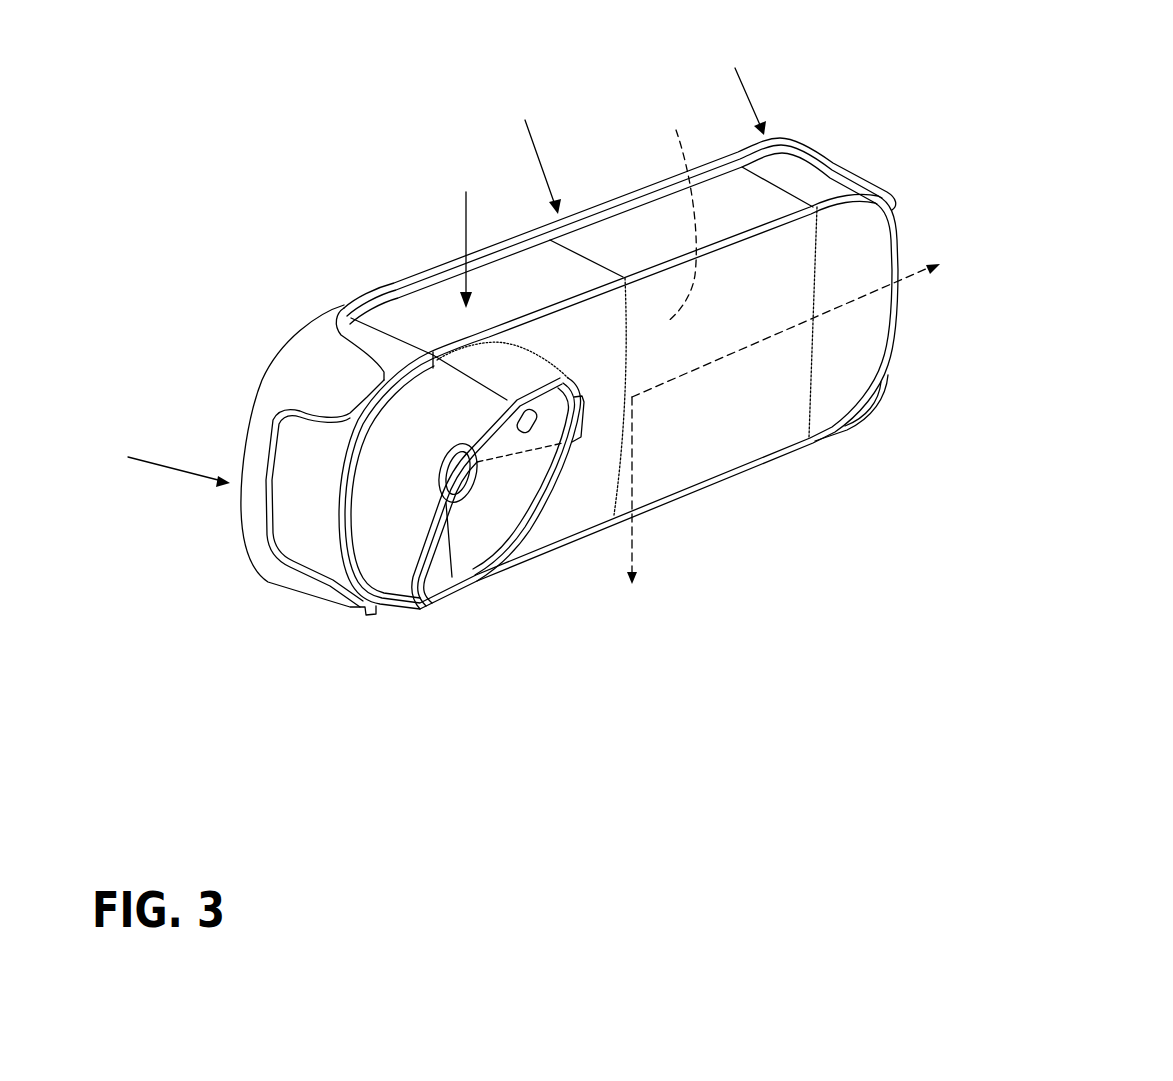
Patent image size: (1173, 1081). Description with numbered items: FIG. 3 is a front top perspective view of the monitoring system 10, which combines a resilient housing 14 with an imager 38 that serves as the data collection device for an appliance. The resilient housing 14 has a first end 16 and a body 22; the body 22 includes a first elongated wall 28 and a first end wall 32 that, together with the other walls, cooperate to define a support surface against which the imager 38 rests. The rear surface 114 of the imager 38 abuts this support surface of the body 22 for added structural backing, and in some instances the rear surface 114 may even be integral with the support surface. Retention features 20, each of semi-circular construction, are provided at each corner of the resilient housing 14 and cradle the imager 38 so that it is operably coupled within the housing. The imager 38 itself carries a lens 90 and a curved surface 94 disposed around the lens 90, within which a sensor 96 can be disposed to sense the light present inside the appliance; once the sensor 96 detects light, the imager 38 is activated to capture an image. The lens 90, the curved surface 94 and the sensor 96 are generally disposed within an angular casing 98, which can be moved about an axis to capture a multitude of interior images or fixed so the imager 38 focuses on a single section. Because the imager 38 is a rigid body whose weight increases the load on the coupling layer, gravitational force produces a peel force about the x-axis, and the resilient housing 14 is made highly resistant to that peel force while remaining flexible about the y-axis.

The monitoring system 10 is at (222, 250).
The resilient housing 14 is at (344, 304).
The first end 16 is at (245, 516).
The retention features 20 is at (826, 162).
The body 22 is at (578, 212).
The first elongated wall 28 is at (413, 290).
The first end wall 32 is at (250, 448).
The imager 38 is at (668, 455).
The lens 90 is at (465, 480).
The curved surface 94 is at (500, 493).
The sensor 96 is at (543, 377).
The angular casing 98 is at (397, 493).
The rear surface 114 is at (671, 210).